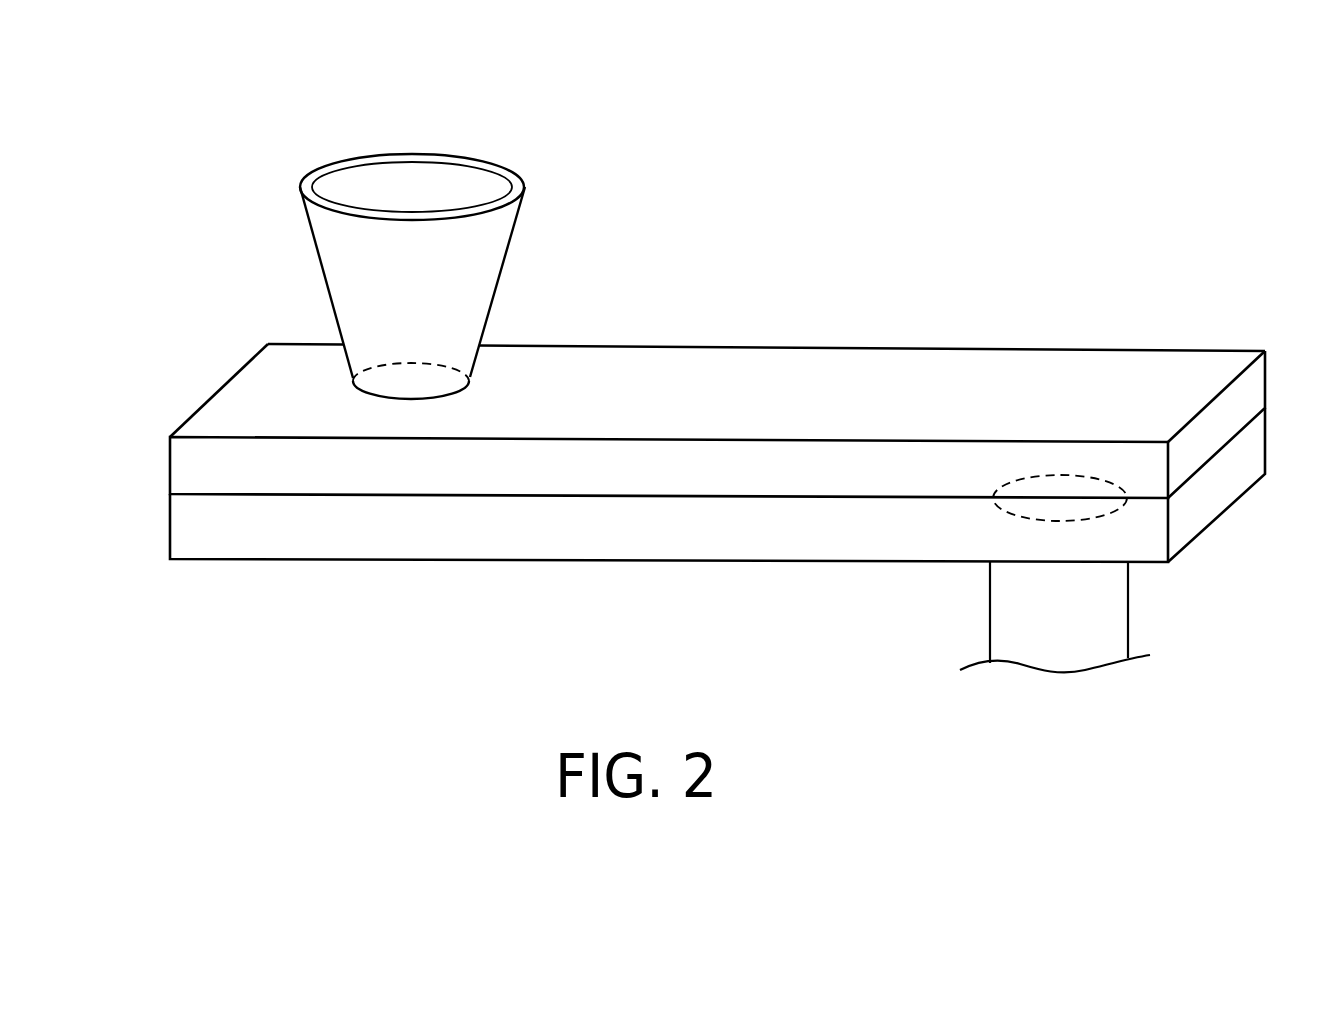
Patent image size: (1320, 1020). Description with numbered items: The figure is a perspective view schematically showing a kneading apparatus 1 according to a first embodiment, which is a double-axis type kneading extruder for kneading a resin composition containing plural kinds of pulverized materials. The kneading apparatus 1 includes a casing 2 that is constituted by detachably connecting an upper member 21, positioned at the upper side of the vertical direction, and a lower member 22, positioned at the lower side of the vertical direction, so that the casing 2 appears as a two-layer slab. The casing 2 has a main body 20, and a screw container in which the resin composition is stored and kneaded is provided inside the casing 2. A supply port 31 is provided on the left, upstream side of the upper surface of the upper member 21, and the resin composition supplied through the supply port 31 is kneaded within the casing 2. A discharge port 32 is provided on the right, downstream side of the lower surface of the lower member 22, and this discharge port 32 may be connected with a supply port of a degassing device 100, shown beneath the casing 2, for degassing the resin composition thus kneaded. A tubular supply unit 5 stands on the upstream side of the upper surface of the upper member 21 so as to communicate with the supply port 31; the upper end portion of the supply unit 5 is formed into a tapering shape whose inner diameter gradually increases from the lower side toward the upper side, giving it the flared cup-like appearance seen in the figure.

The kneading apparatus 1 is at (717, 364).
The casing 2 is at (717, 440).
The supply unit 5 is at (442, 276).
The main body 20 is at (824, 383).
The upper member 21 is at (715, 383).
The lower member 22 is at (674, 530).
The supply port 31 is at (420, 362).
The discharge port 32 is at (1000, 512).
The degassing device 100 is at (1098, 620).